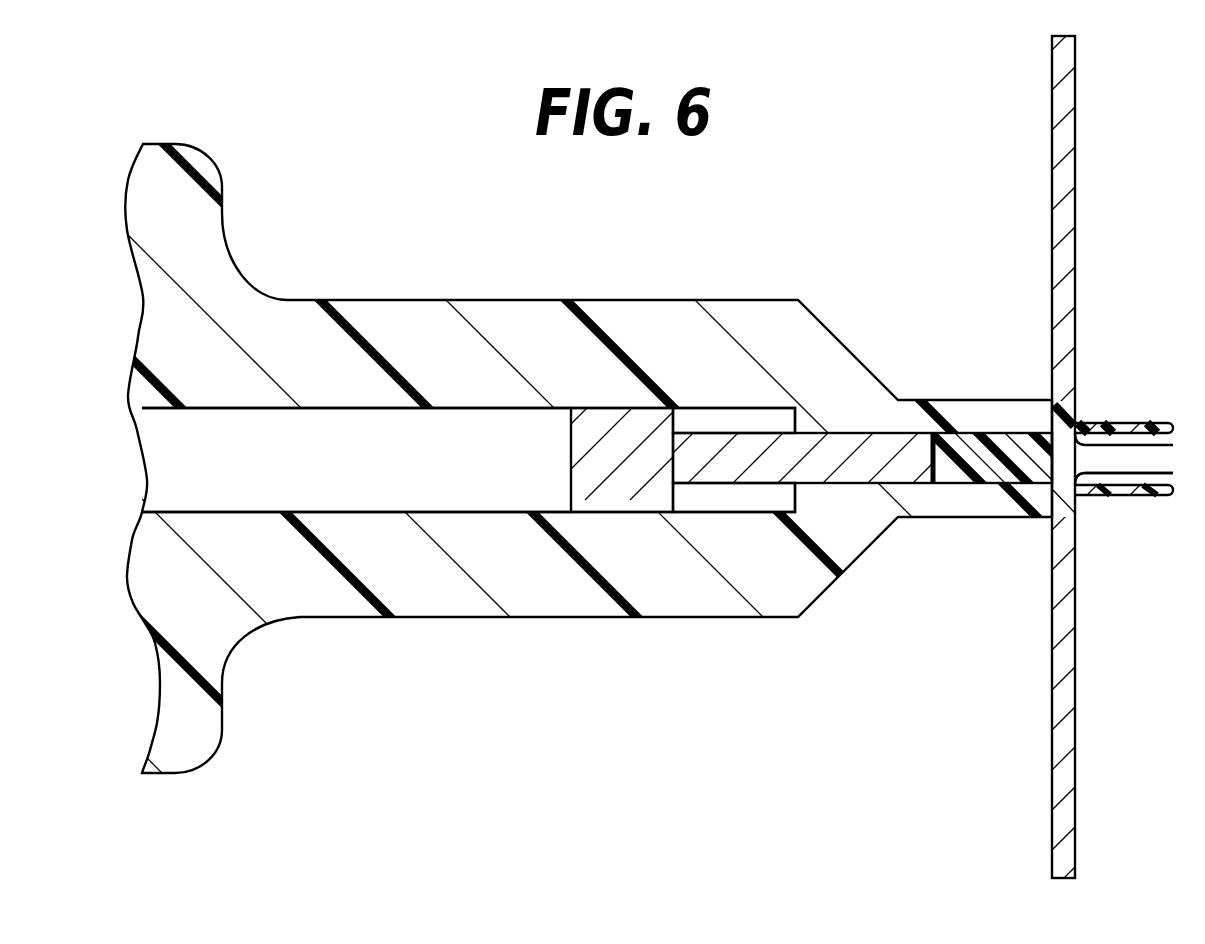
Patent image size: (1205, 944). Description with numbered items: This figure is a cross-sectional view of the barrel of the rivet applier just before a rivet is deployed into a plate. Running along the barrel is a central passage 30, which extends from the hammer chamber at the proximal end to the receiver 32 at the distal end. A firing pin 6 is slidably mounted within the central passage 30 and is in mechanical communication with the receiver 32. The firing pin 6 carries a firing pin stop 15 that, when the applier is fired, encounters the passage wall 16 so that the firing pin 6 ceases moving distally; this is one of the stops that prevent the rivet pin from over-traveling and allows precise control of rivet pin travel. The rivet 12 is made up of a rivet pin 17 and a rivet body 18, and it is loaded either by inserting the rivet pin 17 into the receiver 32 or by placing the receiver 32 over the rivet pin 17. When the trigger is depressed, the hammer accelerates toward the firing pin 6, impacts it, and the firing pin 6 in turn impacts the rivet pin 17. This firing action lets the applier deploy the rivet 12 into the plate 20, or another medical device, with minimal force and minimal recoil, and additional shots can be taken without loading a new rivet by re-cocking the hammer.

The firing pin 6 is at (607, 427).
The rivet 12 is at (1140, 505).
The firing pin stop 15 is at (673, 497).
The passage wall 16 is at (795, 497).
The rivet pin 17 is at (972, 430).
The rivet body 18 is at (1163, 423).
The plate 20 is at (1052, 155).
The central passage 30 is at (452, 438).
The receiver 32 is at (968, 518).